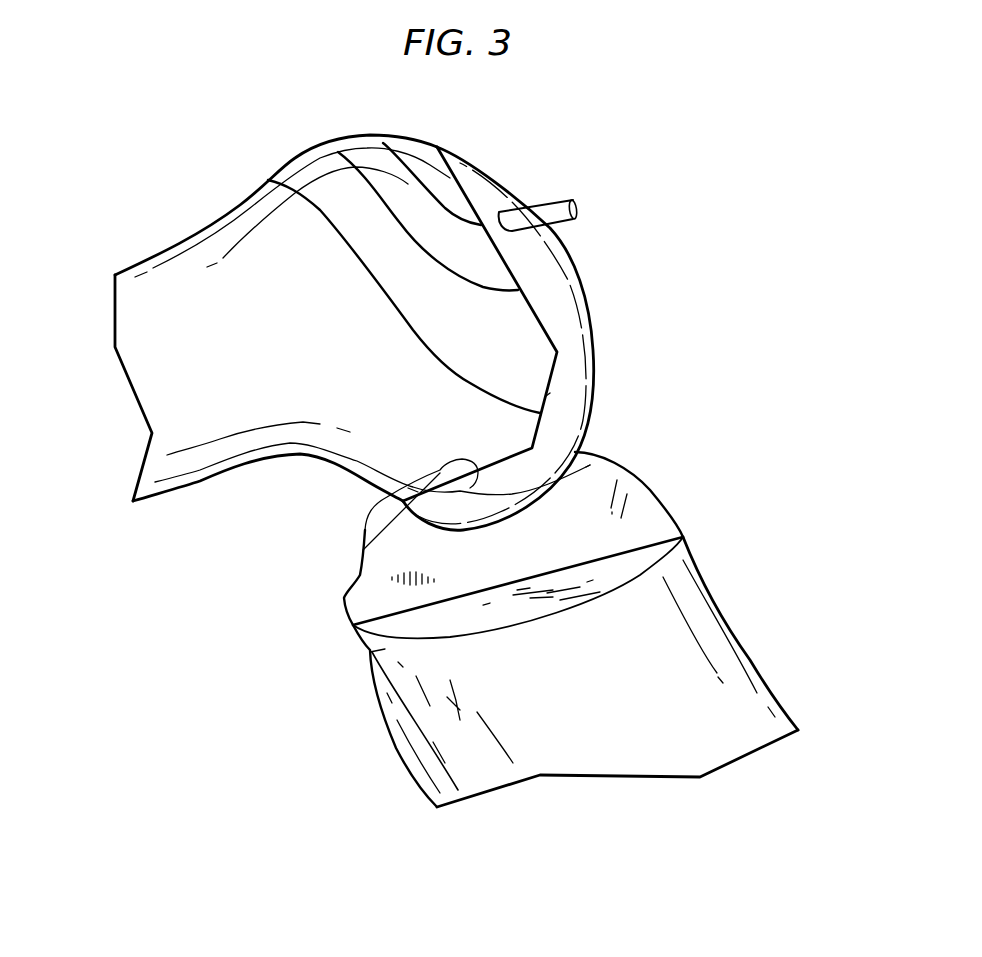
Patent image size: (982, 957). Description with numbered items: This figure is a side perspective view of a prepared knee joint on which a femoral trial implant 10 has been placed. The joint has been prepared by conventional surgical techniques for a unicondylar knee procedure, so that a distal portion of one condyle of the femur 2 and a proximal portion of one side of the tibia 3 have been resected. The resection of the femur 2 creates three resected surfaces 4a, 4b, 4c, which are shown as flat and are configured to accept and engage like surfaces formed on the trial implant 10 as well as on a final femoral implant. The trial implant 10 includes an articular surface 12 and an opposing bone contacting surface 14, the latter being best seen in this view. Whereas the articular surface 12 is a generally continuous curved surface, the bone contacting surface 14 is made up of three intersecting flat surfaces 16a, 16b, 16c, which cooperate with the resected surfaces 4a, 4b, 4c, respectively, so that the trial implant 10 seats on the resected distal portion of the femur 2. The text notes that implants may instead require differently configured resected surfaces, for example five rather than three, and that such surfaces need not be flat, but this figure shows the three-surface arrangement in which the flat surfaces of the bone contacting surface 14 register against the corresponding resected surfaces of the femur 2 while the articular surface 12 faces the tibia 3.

The femoral trial implant 10 is at (580, 145).
The femur 2 is at (204, 288).
The tibia 3 is at (370, 650).
The resected surface 4a is at (513, 270).
The resected surface 4b is at (550, 393).
The resected surface 4c is at (590, 465).
The articular surface 12 is at (593, 320).
The bone contacting surface 14 is at (338, 152).
The flat surface 16a is at (383, 143).
The flat surface 16b is at (268, 180).
The flat surface 16c is at (440, 468).